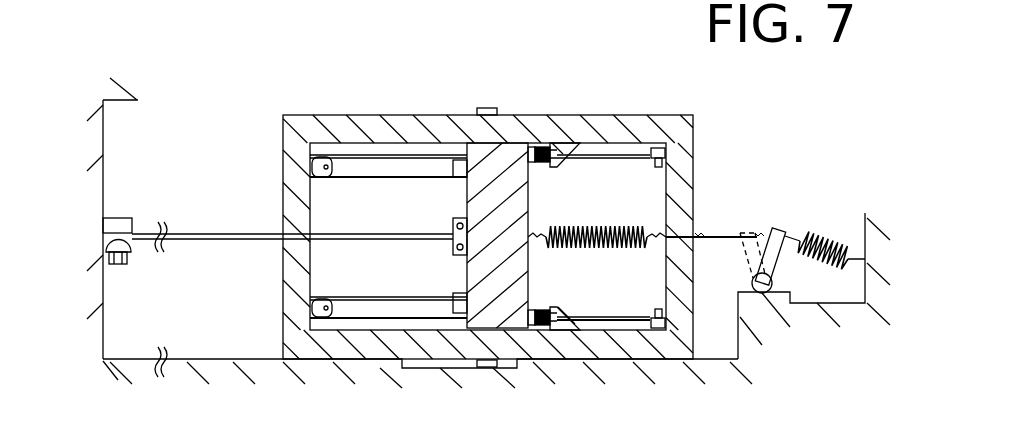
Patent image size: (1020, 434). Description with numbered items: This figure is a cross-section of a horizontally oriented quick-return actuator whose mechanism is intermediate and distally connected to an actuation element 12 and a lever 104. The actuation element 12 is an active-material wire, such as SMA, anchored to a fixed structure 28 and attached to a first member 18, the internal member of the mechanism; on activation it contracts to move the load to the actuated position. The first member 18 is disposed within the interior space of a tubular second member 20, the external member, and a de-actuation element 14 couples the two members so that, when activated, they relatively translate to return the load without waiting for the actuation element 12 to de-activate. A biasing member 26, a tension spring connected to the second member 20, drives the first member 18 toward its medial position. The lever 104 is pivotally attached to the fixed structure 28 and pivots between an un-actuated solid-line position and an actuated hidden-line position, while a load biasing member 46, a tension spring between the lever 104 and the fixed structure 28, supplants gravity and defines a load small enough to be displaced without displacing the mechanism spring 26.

The actuation element 12 is at (215, 241).
The de-actuation element 14 is at (411, 150).
The first member 18 is at (501, 142).
The second member 20 is at (695, 152).
The biasing member 26 is at (600, 226).
The fixed structure 28 is at (846, 215).
The load biasing member 46 is at (823, 232).
The lever 104 is at (783, 228).